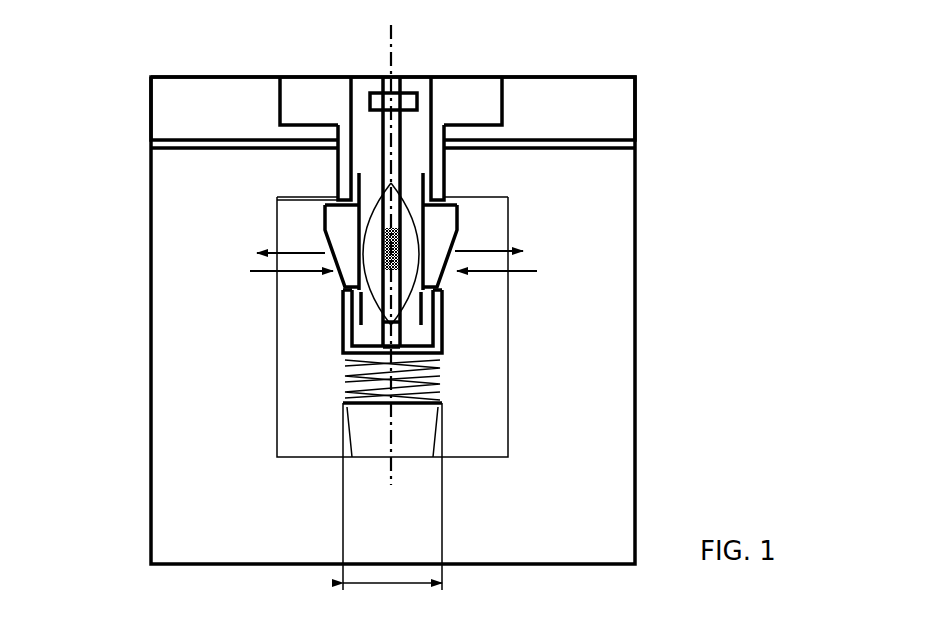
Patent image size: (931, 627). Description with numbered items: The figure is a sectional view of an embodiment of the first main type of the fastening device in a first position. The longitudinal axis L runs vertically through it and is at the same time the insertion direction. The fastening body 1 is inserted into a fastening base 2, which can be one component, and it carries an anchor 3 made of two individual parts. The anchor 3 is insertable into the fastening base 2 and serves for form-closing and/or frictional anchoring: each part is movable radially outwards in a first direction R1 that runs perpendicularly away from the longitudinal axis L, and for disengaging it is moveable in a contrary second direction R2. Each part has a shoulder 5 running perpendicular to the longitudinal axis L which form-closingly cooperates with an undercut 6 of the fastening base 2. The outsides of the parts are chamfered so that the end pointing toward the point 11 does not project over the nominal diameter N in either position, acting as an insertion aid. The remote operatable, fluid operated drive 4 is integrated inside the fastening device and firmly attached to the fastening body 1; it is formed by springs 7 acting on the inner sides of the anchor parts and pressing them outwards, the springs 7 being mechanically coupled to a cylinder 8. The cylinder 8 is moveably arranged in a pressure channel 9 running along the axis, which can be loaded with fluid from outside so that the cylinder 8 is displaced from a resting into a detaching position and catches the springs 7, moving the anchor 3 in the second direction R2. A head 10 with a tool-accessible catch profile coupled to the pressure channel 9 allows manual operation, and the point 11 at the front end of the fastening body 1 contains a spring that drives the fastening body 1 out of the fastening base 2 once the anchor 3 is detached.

The fastening body 1 is at (298, 242).
The fastening base 2 is at (188, 384).
The anchor 3 is at (440, 233).
The drive 4 is at (365, 143).
The shoulder 5 is at (337, 200).
The undercut 6 is at (306, 222).
The springs 7 is at (375, 280).
The cylinder 8 is at (402, 254).
The pressure channel 9 is at (387, 130).
The head 10 is at (470, 90).
The point 11 is at (480, 429).
The longitudinal axis L is at (393, 50).
The first direction R1 is at (290, 245).
The second direction R2 is at (263, 273).
The nominal diameter N is at (392, 600).